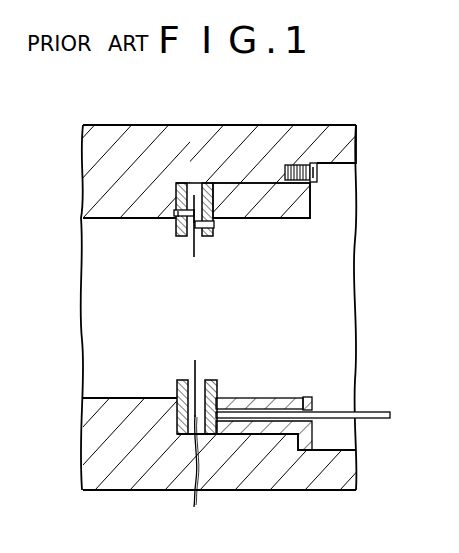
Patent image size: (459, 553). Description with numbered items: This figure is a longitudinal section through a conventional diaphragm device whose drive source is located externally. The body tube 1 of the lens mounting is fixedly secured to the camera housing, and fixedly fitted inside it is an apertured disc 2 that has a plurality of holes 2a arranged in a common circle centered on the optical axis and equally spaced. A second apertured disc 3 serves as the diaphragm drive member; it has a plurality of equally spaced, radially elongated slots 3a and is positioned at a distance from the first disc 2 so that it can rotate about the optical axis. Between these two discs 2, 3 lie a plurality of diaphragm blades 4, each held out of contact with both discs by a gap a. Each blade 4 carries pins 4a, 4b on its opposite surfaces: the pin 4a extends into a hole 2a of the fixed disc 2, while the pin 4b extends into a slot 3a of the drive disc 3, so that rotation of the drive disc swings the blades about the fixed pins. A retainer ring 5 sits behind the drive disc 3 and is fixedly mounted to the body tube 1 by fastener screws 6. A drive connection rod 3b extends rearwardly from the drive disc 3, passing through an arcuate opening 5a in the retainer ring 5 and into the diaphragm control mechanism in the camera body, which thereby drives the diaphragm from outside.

The body tube 1 is at (322, 133).
The apertured disc 2 is at (180, 183).
The hole 2a is at (171, 223).
The apertured disc (diaphragm drive member) 3 is at (207, 183).
The radially elongated slot 3a is at (216, 225).
The drive connection rod 3b is at (377, 412).
The diaphragm blade 4 is at (196, 244).
The pin 4a is at (179, 231).
The pin 4b is at (212, 221).
The retainer ring 5 is at (305, 204).
The arcuate opening 5a is at (305, 397).
The fastener screw 6 is at (318, 174).
The gap a is at (196, 475).